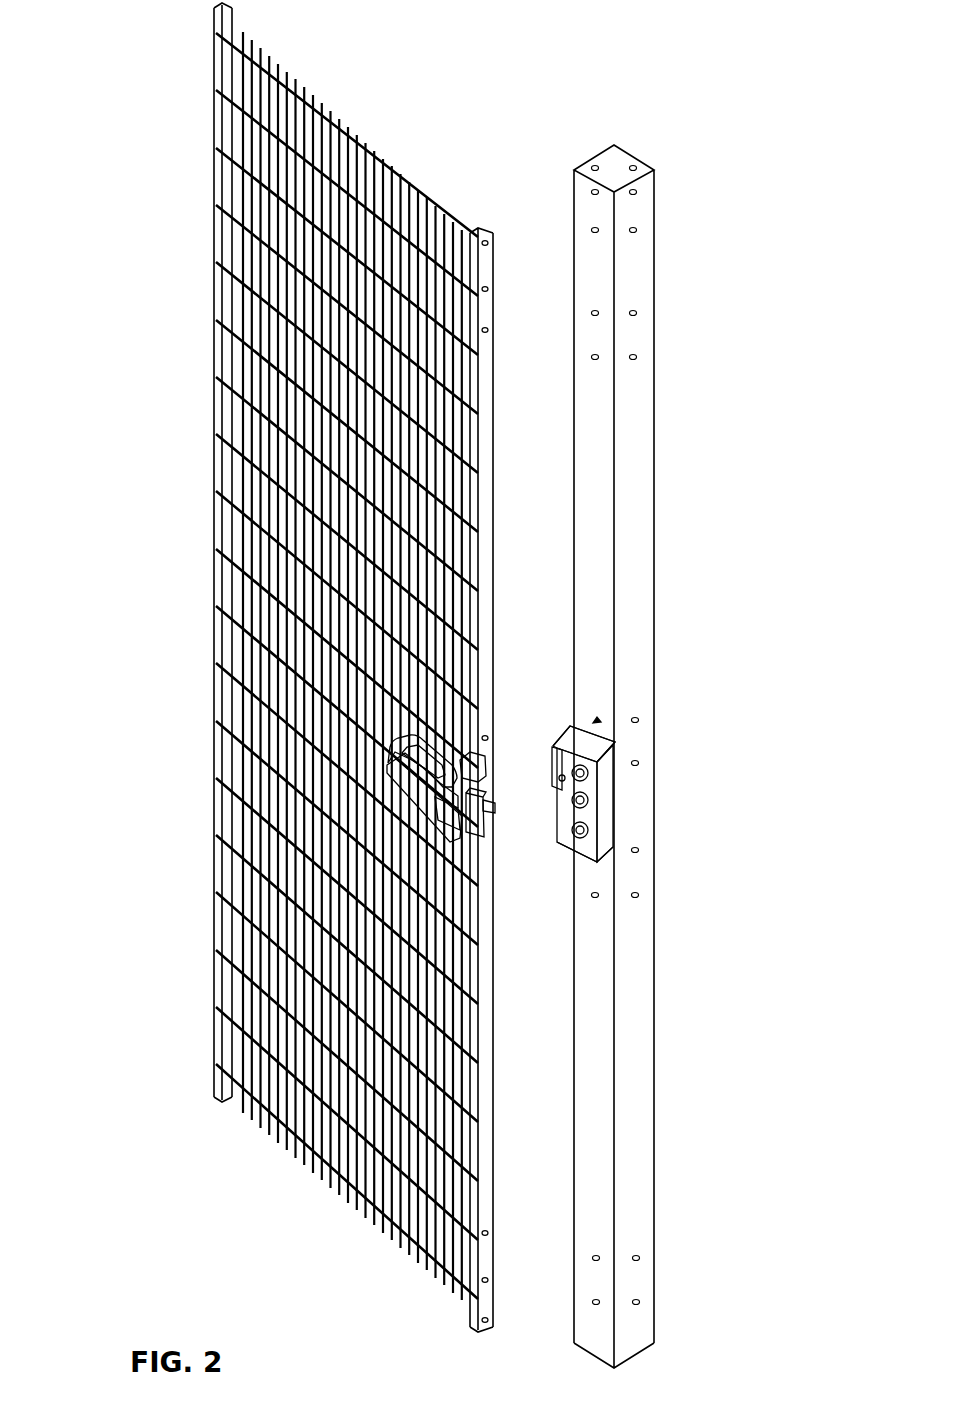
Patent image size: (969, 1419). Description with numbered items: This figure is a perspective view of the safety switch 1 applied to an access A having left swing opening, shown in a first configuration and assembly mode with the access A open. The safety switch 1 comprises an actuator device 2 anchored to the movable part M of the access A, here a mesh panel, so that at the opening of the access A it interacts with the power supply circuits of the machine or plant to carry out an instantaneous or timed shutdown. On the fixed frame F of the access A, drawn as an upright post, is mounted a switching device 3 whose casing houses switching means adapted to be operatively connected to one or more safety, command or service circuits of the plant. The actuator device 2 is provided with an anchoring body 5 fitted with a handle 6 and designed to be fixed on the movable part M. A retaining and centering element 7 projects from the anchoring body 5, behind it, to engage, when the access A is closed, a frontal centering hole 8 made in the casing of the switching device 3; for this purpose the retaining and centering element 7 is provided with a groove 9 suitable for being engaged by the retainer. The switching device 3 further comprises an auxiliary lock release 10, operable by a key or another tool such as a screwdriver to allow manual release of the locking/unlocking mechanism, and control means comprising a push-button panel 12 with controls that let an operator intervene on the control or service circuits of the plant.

The movable part M is at (213, 143).
The access A is at (493, 158).
The fixed frame F is at (647, 205).
The safety switch 1 is at (645, 761).
The actuator device 2 is at (398, 741).
The switching device 3 is at (597, 717).
The anchoring body 5 is at (397, 823).
The handle 6 is at (385, 772).
The retaining and centering element 7 is at (492, 808).
The frontal centering hole 8 is at (610, 747).
The groove 9 is at (490, 760).
The auxiliary lock release 10 is at (550, 745).
The push-button panel 12 is at (610, 812).